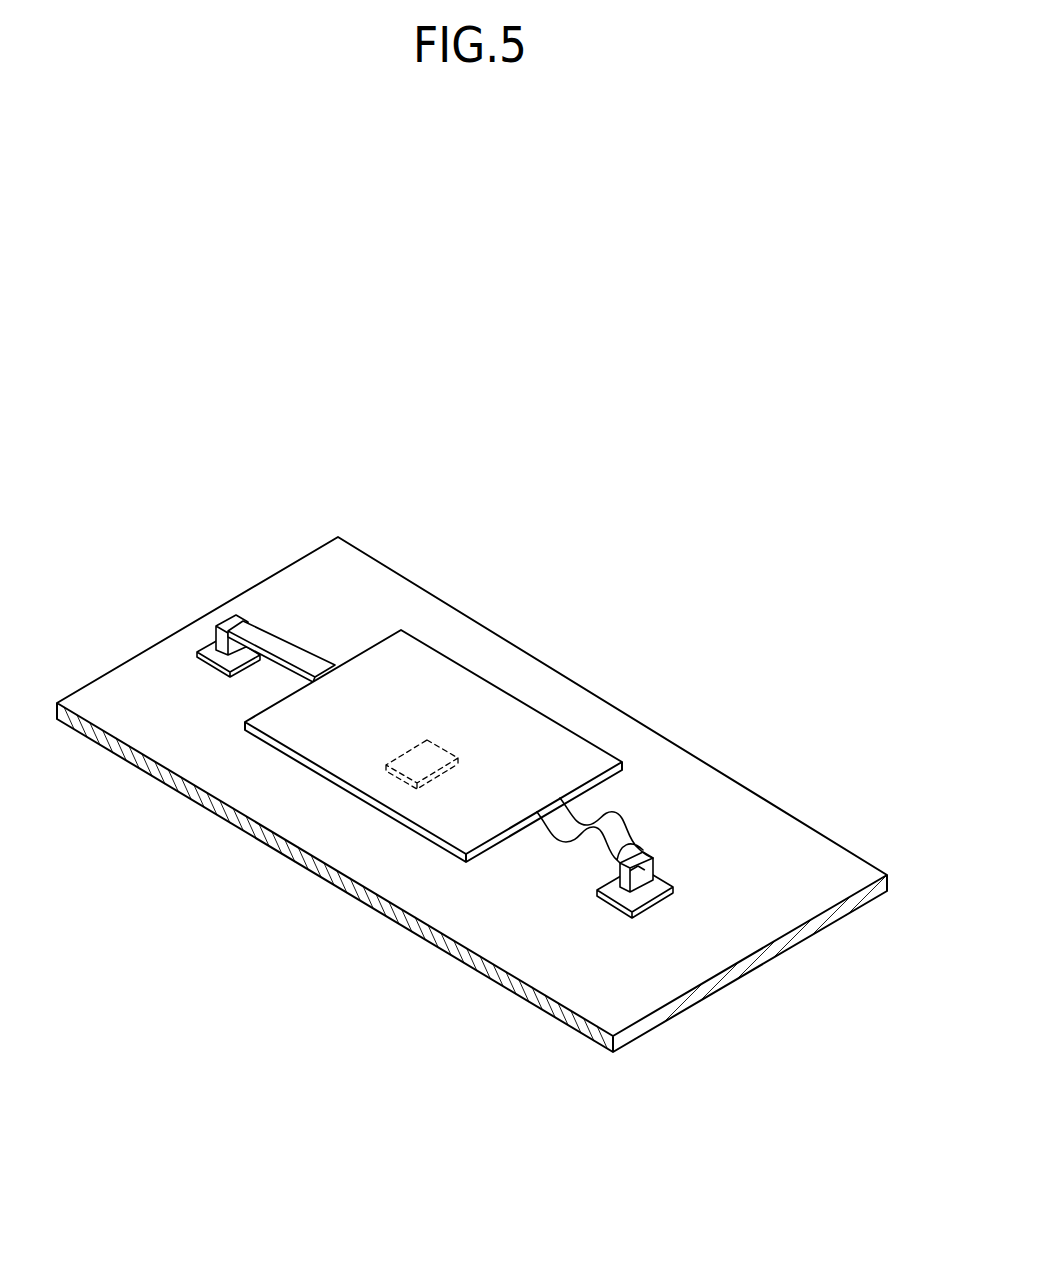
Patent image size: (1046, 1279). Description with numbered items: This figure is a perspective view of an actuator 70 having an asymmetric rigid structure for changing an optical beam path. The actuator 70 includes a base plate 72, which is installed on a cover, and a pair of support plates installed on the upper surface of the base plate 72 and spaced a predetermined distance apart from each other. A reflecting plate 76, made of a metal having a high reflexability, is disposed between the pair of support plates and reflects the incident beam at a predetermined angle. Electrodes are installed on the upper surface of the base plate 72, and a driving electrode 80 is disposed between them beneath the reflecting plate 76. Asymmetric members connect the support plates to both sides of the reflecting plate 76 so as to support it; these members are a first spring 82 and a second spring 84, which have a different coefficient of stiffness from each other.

The actuator 70 is at (472, 760).
The base plate 72 is at (663, 1017).
The reflecting plate 76 is at (558, 747).
The driving electrode 80 is at (430, 750).
The first spring 82 is at (312, 663).
The second spring 84 is at (595, 832).